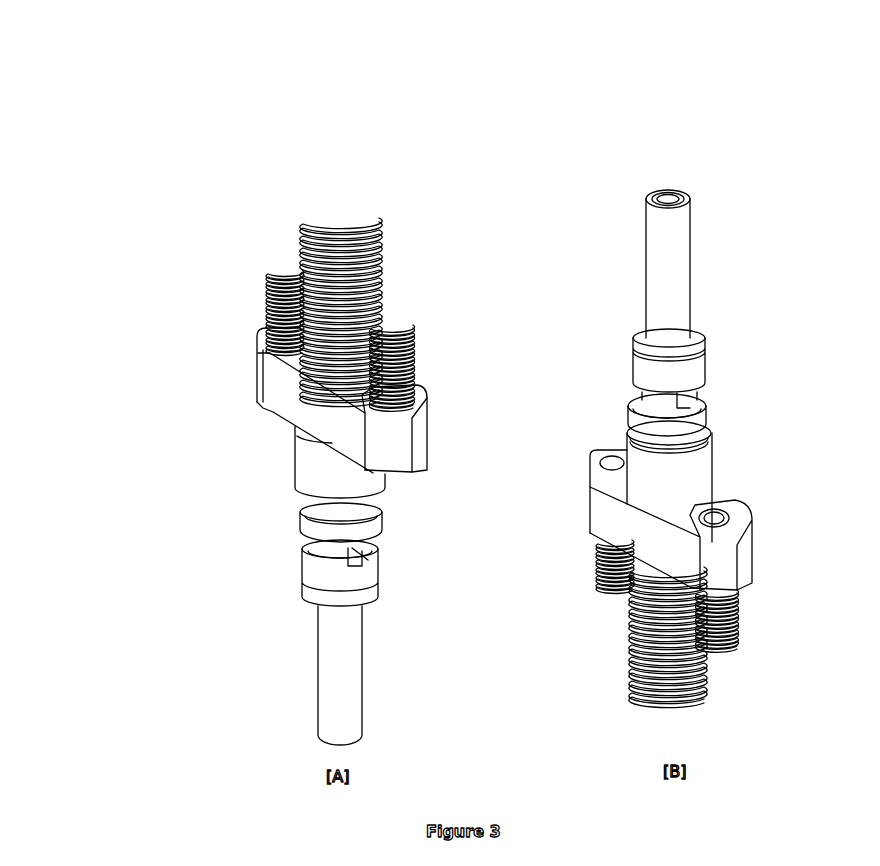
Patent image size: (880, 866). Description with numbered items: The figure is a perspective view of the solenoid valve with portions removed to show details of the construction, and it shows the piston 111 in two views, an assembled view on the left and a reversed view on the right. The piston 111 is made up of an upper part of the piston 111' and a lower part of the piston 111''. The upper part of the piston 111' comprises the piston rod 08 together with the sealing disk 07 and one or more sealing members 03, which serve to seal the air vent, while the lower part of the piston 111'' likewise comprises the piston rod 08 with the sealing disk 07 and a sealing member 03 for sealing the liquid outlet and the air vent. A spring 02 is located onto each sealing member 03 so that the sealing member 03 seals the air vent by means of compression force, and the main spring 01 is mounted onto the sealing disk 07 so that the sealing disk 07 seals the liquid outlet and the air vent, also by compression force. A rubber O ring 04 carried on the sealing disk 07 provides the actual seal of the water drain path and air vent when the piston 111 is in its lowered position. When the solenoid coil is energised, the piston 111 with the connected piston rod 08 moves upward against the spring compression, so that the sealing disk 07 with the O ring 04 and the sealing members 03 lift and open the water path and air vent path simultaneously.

The piston 111 is at (317, 243).
The upper part of the piston 111' is at (200, 329).
The lower part of the piston 111'' is at (193, 639).
The main spring 01 is at (310, 212).
The spring 02 is at (276, 268).
The sealing member 03 is at (613, 462).
The O ring 04 is at (303, 528).
The sealing disk 07 is at (260, 313).
The piston rod 08 is at (380, 538).